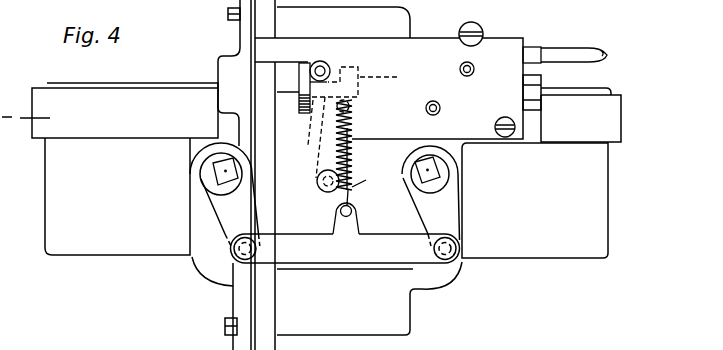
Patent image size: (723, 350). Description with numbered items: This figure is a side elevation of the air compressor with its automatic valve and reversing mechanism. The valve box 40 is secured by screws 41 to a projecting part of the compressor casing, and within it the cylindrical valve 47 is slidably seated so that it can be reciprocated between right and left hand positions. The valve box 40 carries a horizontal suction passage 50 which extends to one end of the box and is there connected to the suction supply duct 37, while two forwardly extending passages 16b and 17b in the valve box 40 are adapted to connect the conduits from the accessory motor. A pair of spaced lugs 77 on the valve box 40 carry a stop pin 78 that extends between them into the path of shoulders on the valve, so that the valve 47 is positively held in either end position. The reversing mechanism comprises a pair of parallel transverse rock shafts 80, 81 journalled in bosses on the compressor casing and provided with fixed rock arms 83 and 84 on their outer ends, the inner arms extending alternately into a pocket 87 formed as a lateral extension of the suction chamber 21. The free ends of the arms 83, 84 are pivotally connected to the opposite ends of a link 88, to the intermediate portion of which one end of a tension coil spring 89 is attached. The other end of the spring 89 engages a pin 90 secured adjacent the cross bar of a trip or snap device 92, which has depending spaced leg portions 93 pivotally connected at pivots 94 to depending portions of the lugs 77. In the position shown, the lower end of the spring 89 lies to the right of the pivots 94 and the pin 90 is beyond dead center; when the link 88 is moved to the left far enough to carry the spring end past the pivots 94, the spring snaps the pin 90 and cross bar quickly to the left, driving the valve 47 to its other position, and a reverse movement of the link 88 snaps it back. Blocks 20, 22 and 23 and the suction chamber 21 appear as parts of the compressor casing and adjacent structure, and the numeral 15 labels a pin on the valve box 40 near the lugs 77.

The pin 15 is at (307, 66).
The forwardly extending passage 16b is at (479, 122).
The forwardly extending passage 17b is at (533, 27).
The base frame 20 is at (65, 202).
The suction chamber 21 is at (349, 302).
The left block 22 is at (125, 169).
The right block 23 is at (535, 200).
The suction supply duct 37 is at (613, 56).
The valve box 40 is at (389, 73).
The screws 41 is at (509, 135).
The cylindrical valve 47 is at (545, 98).
The horizontal suction passage 50 is at (541, 46).
The lugs 77 is at (314, 126).
The stop pin 78 is at (323, 61).
The rock shaft 80 is at (200, 176).
The rock shaft 81 is at (429, 172).
The rock arm 83 is at (225, 194).
The rock arm 84 is at (431, 196).
The pocket 87 is at (458, 289).
The link 88 is at (344, 248).
The tension coil spring 89 is at (363, 202).
The pin 90 is at (350, 108).
The trip or snap device 92 is at (313, 121).
The leg portions 93 is at (353, 145).
The pivots 94 is at (324, 191).